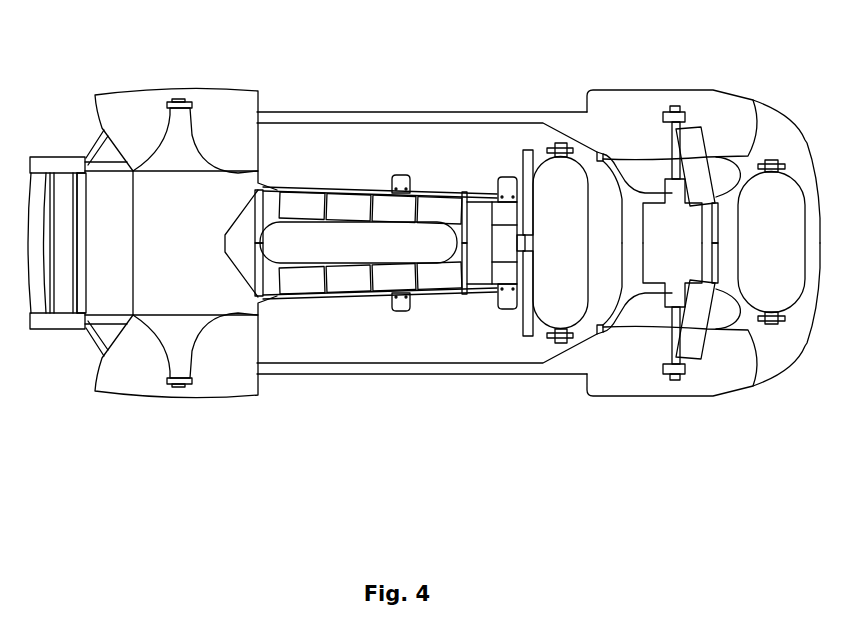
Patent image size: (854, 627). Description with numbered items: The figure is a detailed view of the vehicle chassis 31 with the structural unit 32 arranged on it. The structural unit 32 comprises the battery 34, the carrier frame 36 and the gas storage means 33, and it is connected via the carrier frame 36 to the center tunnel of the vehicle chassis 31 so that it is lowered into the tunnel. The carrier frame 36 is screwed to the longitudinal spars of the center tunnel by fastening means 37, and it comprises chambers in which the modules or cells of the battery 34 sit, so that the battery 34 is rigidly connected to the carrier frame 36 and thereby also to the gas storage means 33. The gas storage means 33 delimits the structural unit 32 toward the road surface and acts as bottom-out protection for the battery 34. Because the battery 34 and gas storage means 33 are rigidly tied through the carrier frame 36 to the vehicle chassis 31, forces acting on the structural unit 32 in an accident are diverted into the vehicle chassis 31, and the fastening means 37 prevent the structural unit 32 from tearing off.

The vehicle chassis 31 is at (281, 110).
The structural unit 32 is at (375, 348).
The gas storage means 33 is at (366, 246).
The battery 34 is at (301, 196).
The carrier frame 36 is at (270, 287).
The fastening means 37 is at (406, 172).